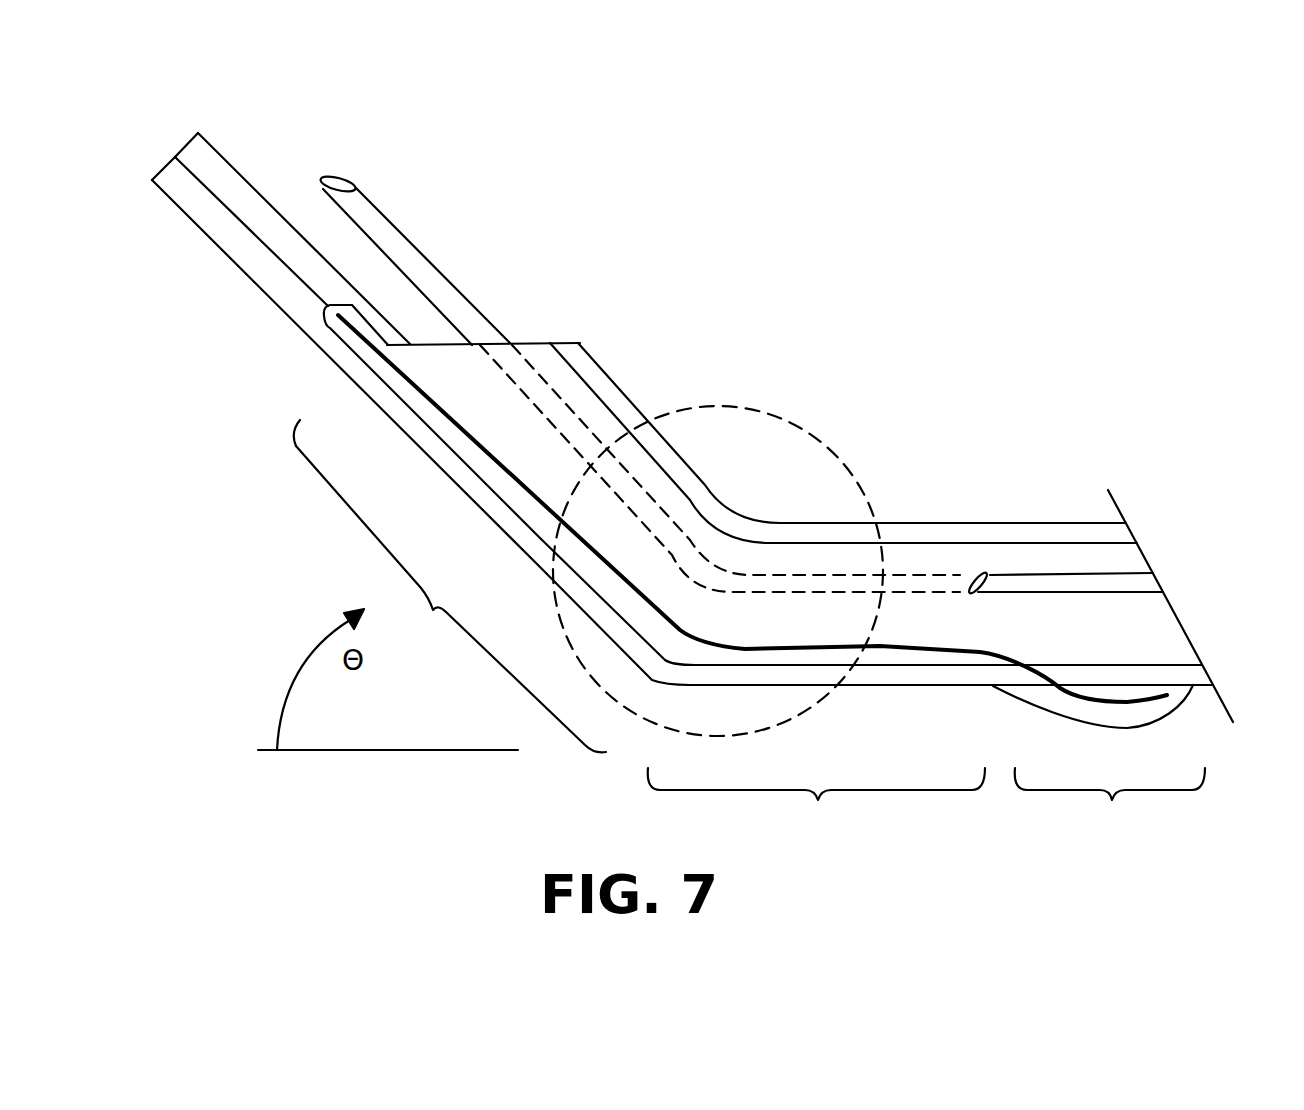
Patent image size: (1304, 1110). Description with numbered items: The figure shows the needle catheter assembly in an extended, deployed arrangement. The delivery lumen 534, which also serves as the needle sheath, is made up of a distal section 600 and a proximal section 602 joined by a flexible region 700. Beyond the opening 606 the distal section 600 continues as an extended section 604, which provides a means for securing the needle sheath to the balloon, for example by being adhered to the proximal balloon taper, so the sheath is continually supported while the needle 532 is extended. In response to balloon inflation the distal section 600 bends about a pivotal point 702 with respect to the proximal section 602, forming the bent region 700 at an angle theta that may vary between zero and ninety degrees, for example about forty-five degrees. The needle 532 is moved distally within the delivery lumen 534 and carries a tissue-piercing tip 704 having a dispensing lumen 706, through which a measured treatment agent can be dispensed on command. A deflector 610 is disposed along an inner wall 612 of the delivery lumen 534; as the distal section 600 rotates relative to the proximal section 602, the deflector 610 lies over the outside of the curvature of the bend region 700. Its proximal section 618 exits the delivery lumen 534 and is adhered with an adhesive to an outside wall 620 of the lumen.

The extended section 604 is at (230, 160).
The needle 532 is at (380, 207).
The opening 606 is at (530, 342).
The deflector 610 is at (420, 390).
The inner wall 612 is at (349, 348).
The distal section 600 is at (450, 586).
The flexible region 700 is at (742, 405).
The delivery lumen 534 is at (917, 540).
The dispensing lumen 706 is at (970, 577).
The tissue-piercing tip 704 is at (986, 562).
The pivotal point 702 is at (648, 678).
The proximal section 602 is at (816, 803).
The proximal section of deflector 618 is at (1110, 804).
The outside wall 620 is at (1175, 686).